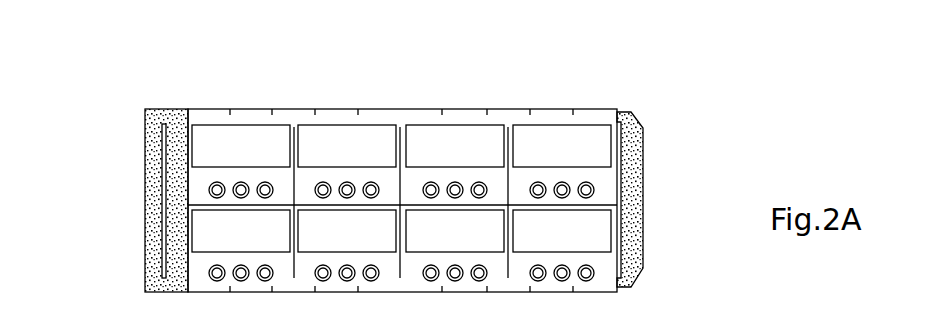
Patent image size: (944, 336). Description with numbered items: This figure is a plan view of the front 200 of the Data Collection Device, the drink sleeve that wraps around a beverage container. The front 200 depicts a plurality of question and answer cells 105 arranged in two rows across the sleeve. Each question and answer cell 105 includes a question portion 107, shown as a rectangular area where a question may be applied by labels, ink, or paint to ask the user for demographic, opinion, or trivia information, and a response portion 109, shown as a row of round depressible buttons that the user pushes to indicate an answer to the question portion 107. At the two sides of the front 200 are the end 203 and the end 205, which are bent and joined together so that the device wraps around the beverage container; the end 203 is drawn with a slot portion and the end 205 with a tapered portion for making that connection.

The question and answer cell 105 is at (337, 183).
The question portion 107 is at (218, 137).
The response portion 109 is at (362, 178).
The front 200 is at (643, 175).
The end 203 is at (145, 247).
The end 205 is at (643, 252).